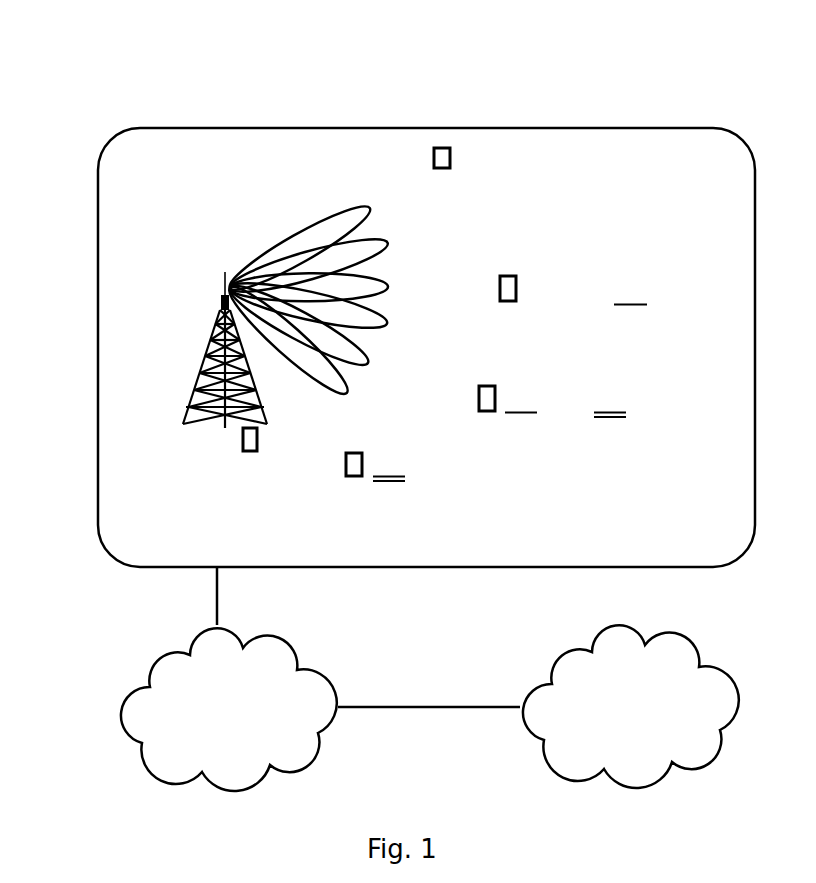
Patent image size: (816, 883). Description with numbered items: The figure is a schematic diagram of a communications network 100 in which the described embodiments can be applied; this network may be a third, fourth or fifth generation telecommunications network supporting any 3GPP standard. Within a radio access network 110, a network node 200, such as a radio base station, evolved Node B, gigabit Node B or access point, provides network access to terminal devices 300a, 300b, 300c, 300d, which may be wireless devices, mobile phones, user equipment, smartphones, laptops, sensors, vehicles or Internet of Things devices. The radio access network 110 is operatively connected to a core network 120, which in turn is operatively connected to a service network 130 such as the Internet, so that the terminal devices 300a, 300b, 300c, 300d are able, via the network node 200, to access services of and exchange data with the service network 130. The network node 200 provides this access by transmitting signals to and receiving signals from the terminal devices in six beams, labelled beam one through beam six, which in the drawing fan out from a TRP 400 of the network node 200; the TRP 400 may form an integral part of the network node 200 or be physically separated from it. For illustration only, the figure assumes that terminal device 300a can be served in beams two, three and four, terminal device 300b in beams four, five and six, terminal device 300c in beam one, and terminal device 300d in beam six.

The communications network 100 is at (172, 57).
The radio access network 110 is at (167, 170).
The core network 120 is at (211, 728).
The service network 130 is at (611, 722).
The network node 200 is at (242, 441).
The terminal device 300a is at (508, 303).
The terminal device 300b is at (489, 413).
The terminal device 300c is at (433, 159).
The terminal device 300d is at (354, 478).
The TRP 400 is at (222, 291).